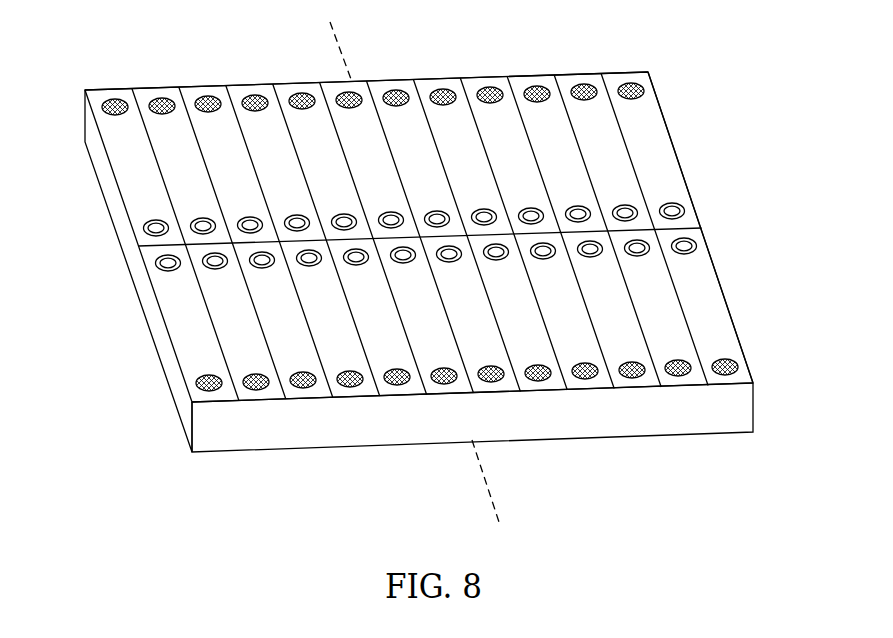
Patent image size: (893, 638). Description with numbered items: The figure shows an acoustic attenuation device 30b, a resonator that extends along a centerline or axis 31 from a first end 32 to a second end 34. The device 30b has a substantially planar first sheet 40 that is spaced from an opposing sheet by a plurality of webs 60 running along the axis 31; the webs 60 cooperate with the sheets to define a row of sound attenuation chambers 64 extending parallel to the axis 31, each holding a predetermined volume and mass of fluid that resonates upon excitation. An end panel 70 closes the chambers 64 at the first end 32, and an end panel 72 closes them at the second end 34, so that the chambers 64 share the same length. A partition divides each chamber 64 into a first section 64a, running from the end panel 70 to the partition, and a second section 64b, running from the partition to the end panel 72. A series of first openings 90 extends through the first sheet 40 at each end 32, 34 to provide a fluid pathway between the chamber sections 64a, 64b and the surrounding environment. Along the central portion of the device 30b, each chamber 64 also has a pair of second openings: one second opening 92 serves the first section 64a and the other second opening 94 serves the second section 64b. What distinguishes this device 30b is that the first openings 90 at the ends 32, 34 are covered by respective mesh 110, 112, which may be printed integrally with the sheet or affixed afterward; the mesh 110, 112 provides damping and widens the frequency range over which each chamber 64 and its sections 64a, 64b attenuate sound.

The device 30b is at (703, 110).
The axis 31 is at (497, 507).
The first end 32 is at (350, 463).
The second end 34 is at (245, 72).
The first sheet 40 is at (178, 340).
The webs 60 is at (723, 290).
The sound attenuation chambers 64 is at (690, 290).
The first section 64a is at (712, 340).
The second section 64b is at (653, 175).
The end panel 70 is at (747, 408).
The end panel 72 is at (528, 72).
The first openings 90 is at (102, 105).
The second opening 92 is at (160, 268).
The second opening 94 is at (147, 230).
The mesh 110 is at (723, 362).
The mesh 112 is at (622, 82).